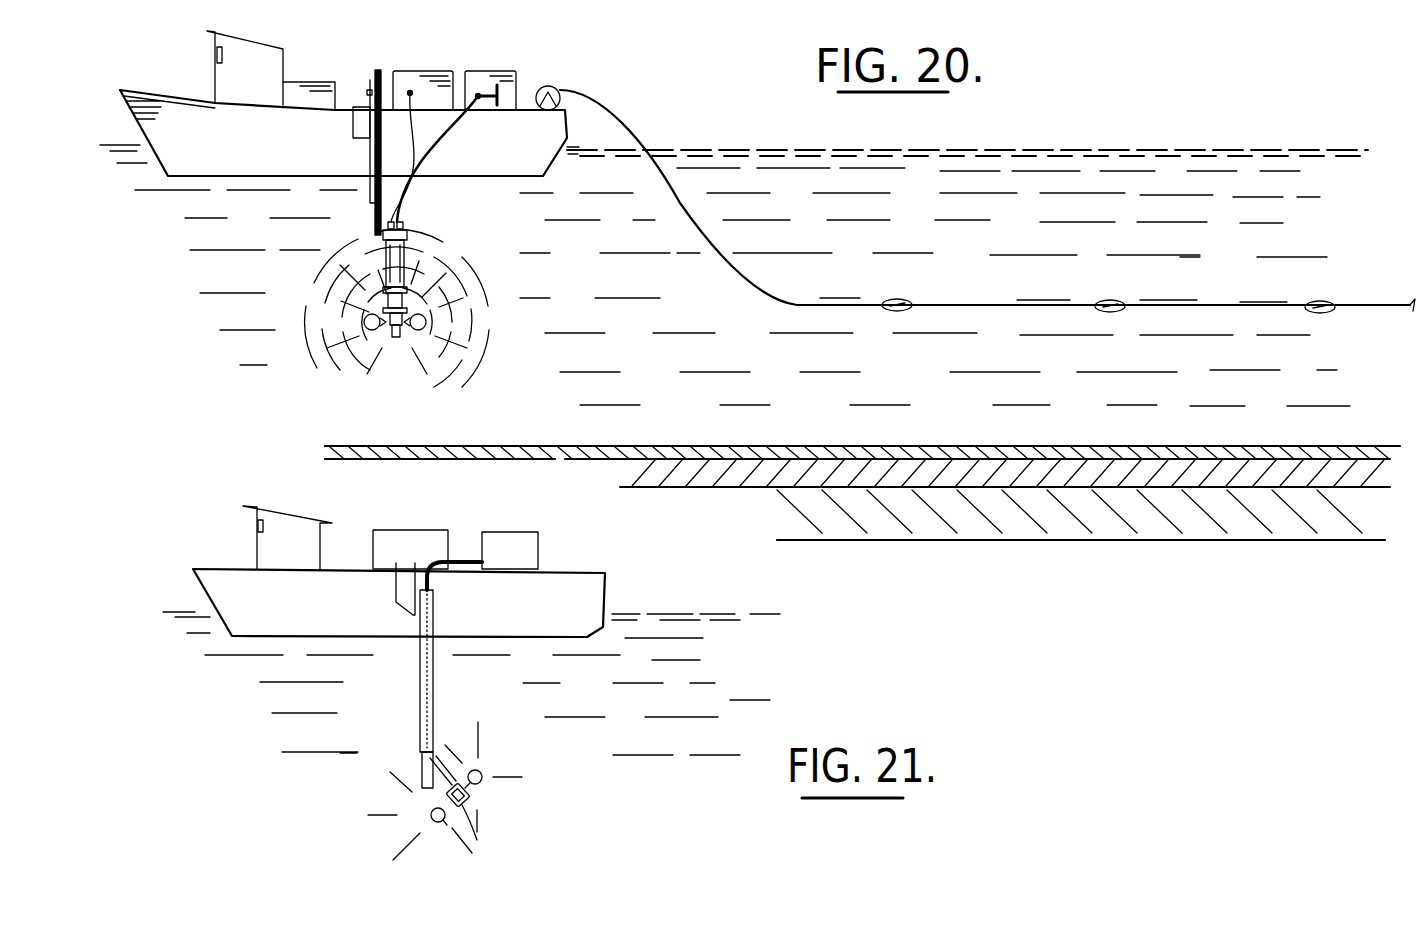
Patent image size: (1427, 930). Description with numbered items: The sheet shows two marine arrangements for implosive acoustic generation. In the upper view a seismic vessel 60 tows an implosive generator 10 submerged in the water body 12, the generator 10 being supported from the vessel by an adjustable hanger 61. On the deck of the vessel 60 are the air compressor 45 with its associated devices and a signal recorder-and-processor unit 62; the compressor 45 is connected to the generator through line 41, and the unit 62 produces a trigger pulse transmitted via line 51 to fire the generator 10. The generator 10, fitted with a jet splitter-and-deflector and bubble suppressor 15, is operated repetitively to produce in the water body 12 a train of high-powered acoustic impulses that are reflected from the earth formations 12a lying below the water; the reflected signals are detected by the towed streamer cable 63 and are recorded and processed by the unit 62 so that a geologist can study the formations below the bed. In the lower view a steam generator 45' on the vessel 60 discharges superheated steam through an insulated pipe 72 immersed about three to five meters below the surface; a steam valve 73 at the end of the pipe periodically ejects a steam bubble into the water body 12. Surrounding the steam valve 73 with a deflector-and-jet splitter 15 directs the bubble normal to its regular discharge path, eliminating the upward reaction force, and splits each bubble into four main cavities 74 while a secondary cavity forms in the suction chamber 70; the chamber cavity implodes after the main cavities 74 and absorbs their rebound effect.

In FIG. 20, the implosive generator 10 is at (418, 255).
In FIG. 20, the water body 12 is at (1024, 253).
In FIG. 21, the water body 12 is at (641, 713).
In FIG. 20, the earth formations 12a is at (1098, 502).
In FIG. 20, the jet splitter-and-deflector and bubble suppressor 15 is at (397, 308).
In FIG. 21, the jet splitter-and-deflector and bubble suppressor 15 is at (467, 795).
In FIG. 20, the line 41 is at (457, 138).
In FIG. 20, the air compressor 45 is at (494, 67).
In FIG. 21, the steam generator 45' is at (482, 546).
In FIG. 20, the line 51 is at (408, 150).
In FIG. 20, the seismic vessel 60 is at (190, 113).
In FIG. 21, the seismic vessel 60 is at (240, 585).
In FIG. 20, the adjustable hanger 61 is at (370, 148).
In FIG. 20, the signal recorder-and-processor unit 62 is at (411, 82).
In FIG. 21, the signal recorder-and-processor unit 62 is at (410, 548).
In FIG. 20, the towed streamer cable 63 is at (790, 302).
In FIG. 21, the suction chamber 70 is at (489, 827).
In FIG. 21, the insulated pipe 72 is at (420, 687).
In FIG. 21, the steam valve 73 is at (420, 758).
In FIG. 21, the main cavities 74 is at (483, 775).